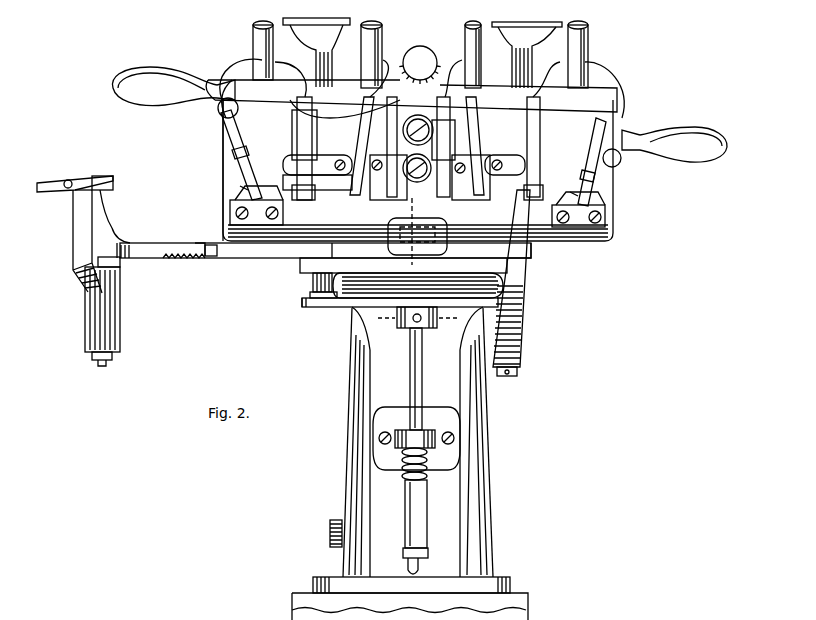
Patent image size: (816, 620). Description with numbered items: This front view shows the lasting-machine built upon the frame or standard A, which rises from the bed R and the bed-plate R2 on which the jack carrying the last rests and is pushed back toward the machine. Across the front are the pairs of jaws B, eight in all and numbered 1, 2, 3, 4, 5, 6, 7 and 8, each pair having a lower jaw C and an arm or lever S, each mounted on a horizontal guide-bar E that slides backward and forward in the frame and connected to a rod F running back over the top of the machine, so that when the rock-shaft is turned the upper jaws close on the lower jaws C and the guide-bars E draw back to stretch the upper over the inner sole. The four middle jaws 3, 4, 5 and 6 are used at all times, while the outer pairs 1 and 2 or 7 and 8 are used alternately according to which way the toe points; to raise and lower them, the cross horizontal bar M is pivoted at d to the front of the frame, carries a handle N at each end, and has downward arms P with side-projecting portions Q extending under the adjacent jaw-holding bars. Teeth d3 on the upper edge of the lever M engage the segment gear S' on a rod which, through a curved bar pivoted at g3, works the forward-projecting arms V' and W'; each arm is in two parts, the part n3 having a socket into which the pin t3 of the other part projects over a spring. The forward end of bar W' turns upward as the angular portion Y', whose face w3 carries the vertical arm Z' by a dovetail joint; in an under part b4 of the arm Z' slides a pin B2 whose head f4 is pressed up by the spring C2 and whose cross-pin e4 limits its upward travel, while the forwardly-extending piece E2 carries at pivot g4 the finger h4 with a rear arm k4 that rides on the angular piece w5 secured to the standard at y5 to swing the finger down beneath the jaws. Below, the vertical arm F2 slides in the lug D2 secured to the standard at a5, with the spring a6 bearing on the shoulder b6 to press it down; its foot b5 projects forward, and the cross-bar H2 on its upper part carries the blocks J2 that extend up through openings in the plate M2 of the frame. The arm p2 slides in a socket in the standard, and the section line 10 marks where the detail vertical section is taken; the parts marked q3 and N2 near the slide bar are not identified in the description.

The bed R is at (520, 596).
The bed-plate R2 is at (330, 577).
The frame or standard A is at (418, 442).
The securing point of lug a5 is at (385, 470).
The vertical arm F2 is at (422, 396).
The lug D2 is at (408, 430).
The spring a6 is at (426, 482).
The shoulder b6 is at (406, 505).
The foot b5 is at (430, 551).
The spring C2 is at (408, 572).
The under part of arm b4 is at (118, 313).
The horizontal cross-bar H2 is at (338, 302).
The plate M2 is at (306, 300).
The vertical block J2 is at (312, 292).
The arm part n3 is at (290, 266).
The arm V' is at (325, 262).
The arm W' is at (547, 254).
The longitudinal pin t3 is at (210, 259).
The rack q3 is at (168, 262).
The pawl N2 is at (210, 244).
The arm p2 is at (359, 233).
The pivot g3 is at (449, 251).
The section line 10 is at (414, 228).
The rod F is at (620, 98).
The cross horizontal bar M is at (345, 107).
The lower jaw C is at (586, 40).
The arm or lever S is at (380, 82).
The segment of a gear S' is at (420, 53).
The teeth d3 is at (438, 74).
The handle N is at (700, 131).
The pairs of jaws B is at (607, 207).
The securing point of angular piece y5 is at (607, 222).
The angular piece w5 is at (600, 200).
The arm P is at (272, 119).
The side projecting portion Q is at (580, 176).
The pair of jaws 1 is at (244, 208).
The pair of jaws 2 is at (301, 201).
The horizontal bar E is at (325, 158).
The pivot d is at (380, 154).
The pair of jaws 3 is at (355, 196).
The pair of jaws 4 is at (387, 201).
The pair of jaws 5 is at (443, 198).
The pair of jaws 6 is at (485, 186).
The pair of jaws 7 is at (537, 201).
The pair of jaws 8 is at (577, 209).
The finger h4 is at (42, 193).
The vertical arm Z' is at (278, 196).
The pivot g4 is at (66, 181).
The horizontal forwardly-extending piece E2 is at (94, 184).
The arm k4 is at (115, 178).
The face w3 is at (104, 209).
The angular portion Y' is at (124, 237).
The head of pin f4 is at (120, 276).
The cross-pin e4 is at (113, 356).
The pin B2 is at (104, 364).